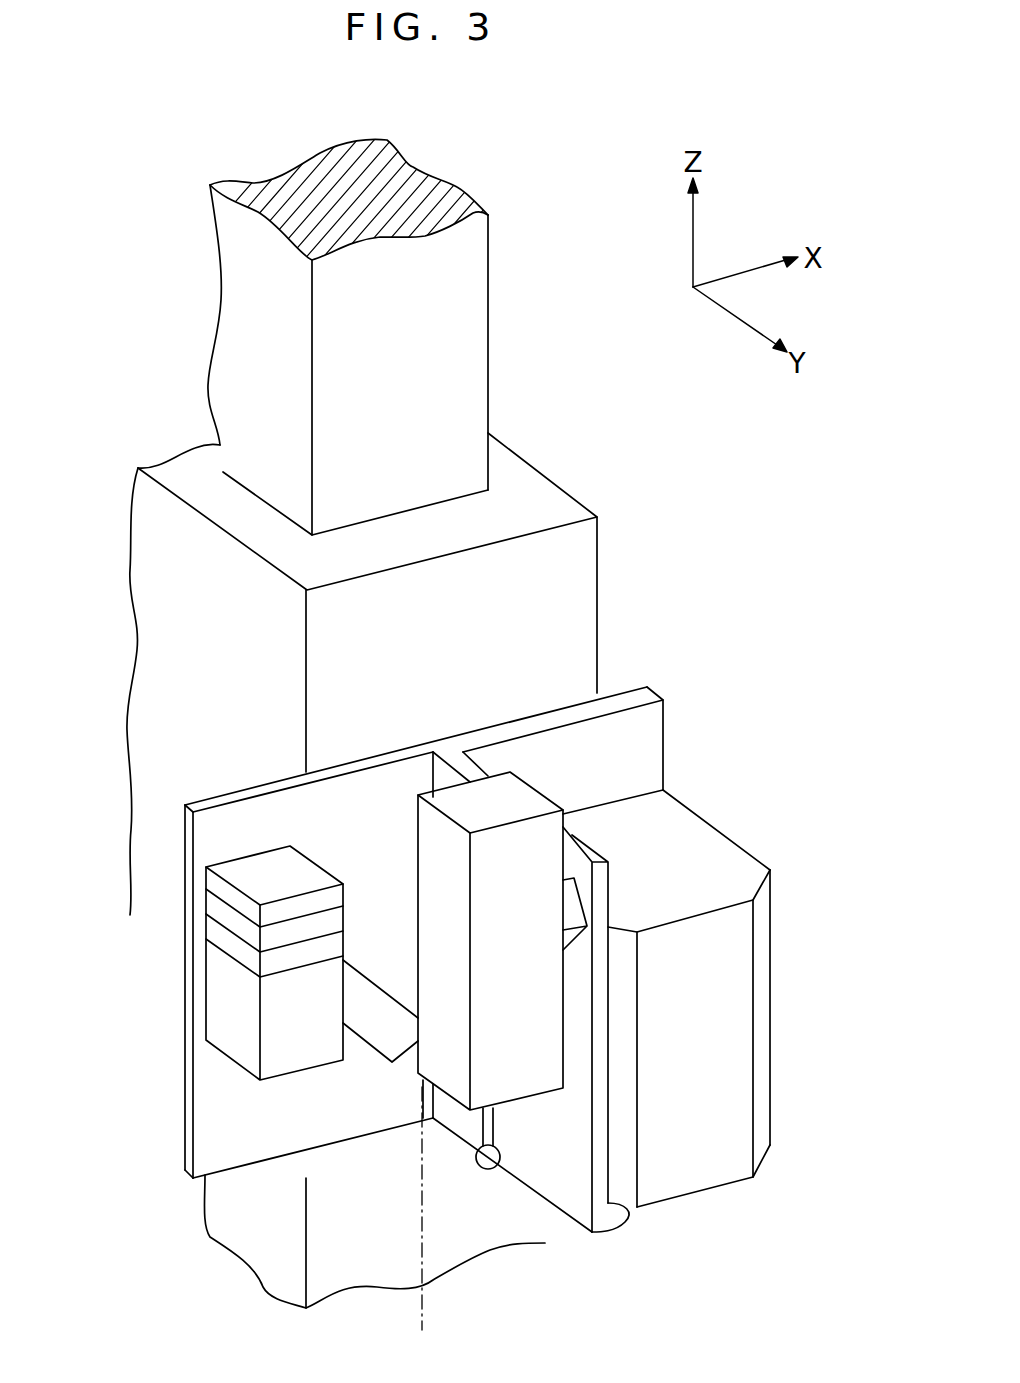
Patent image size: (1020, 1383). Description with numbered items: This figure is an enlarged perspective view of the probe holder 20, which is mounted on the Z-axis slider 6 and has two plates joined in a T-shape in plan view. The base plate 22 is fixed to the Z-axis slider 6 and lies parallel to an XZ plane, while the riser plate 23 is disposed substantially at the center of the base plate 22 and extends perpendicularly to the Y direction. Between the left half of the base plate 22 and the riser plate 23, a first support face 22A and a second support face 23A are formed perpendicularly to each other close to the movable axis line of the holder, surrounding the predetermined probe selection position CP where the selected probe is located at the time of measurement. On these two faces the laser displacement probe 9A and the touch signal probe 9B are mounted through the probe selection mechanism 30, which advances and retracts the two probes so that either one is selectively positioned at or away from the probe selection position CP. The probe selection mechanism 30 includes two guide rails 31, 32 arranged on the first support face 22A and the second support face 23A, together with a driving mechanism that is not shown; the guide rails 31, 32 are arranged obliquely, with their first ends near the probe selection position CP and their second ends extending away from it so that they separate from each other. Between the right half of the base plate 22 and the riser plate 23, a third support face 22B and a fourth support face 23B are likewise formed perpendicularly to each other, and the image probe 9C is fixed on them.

The Z-axis slider 6 is at (558, 498).
The probe holder 20 is at (393, 679).
The base plate 22 is at (400, 752).
The riser plate 23 is at (480, 753).
The first support face 22A is at (200, 1143).
The third support face 22B is at (647, 742).
The second support face 23A is at (530, 1176).
The fourth support face 23B is at (605, 845).
The laser displacement probe 9A is at (223, 1002).
The touch signal probe 9B is at (437, 846).
The image probe 9C is at (760, 1025).
The probe selection mechanism 30 is at (355, 1066).
The guide rail 31 is at (375, 994).
The guide rail 32 is at (570, 907).
The probe selection position CP is at (421, 1225).